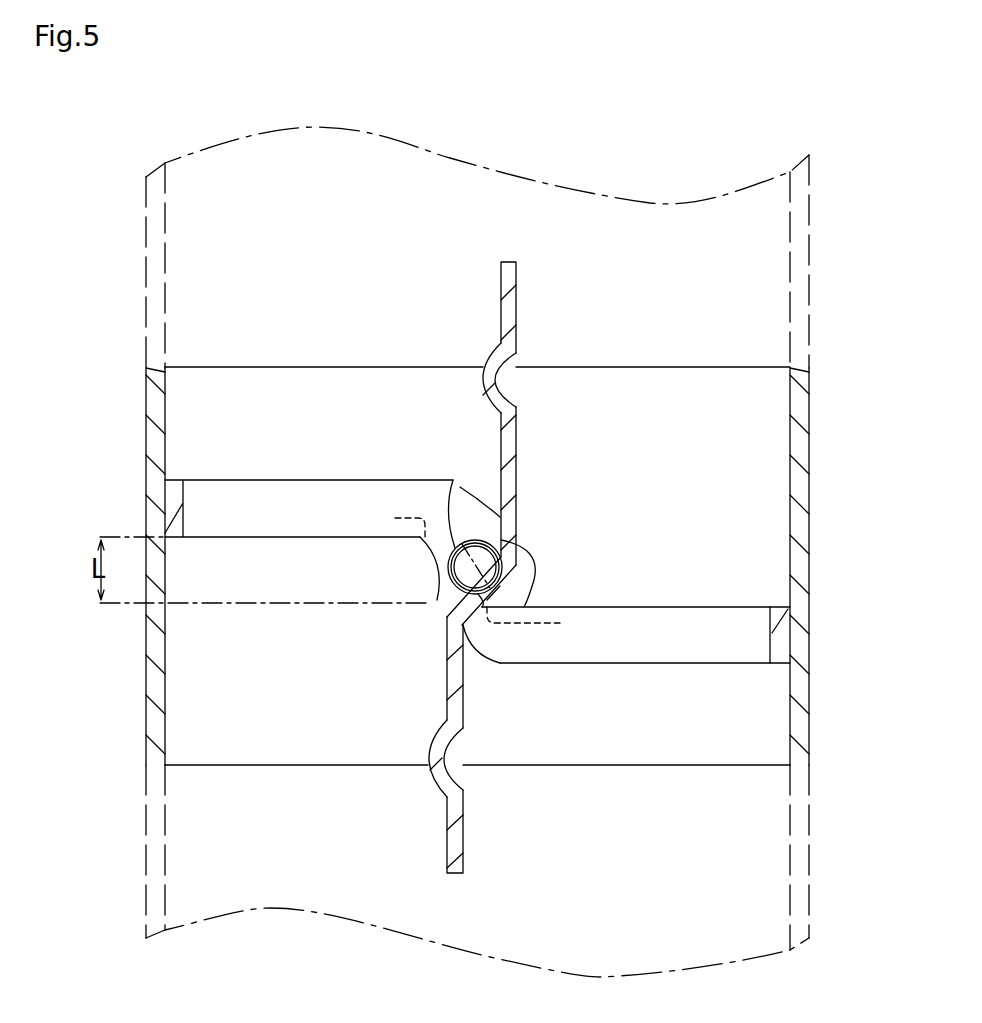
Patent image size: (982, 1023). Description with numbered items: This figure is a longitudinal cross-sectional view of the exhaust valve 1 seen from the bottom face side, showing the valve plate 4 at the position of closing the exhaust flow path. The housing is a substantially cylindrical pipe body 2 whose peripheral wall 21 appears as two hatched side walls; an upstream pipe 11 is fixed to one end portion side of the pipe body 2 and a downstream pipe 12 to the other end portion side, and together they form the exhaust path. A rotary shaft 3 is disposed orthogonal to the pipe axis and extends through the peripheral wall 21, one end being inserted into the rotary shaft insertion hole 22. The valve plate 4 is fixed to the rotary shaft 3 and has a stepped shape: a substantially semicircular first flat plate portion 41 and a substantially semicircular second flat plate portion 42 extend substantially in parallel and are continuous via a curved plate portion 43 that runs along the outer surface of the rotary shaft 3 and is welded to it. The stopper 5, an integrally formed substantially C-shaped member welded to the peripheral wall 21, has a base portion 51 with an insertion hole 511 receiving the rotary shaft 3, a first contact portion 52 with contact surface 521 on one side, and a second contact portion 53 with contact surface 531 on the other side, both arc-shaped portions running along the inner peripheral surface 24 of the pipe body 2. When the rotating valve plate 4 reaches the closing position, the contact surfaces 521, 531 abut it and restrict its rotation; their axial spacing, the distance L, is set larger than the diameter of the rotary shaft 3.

The exhaust valve 1 is at (840, 552).
The upstream pipe 11 is at (800, 262).
The downstream pipe 12 is at (800, 870).
The peripheral wall 21 is at (805, 470).
The pipe body 2 is at (163, 550).
The rotary shaft insertion hole 22 is at (450, 606).
The inner peripheral surface 24 is at (165, 635).
The rotary shaft 3 is at (460, 567).
The valve plate 4 is at (494, 567).
The first flat plate portion 41 is at (516, 430).
The second flat plate portion 42 is at (447, 822).
The curved plate portion 43 is at (515, 597).
The stopper 5 is at (600, 566).
The base portion 51 is at (530, 543).
The insertion hole 511 is at (460, 487).
The first contact portion 52 is at (626, 635).
The contact surface 521 is at (738, 605).
The second contact portion 53 is at (310, 518).
The contact surface 531 is at (300, 540).